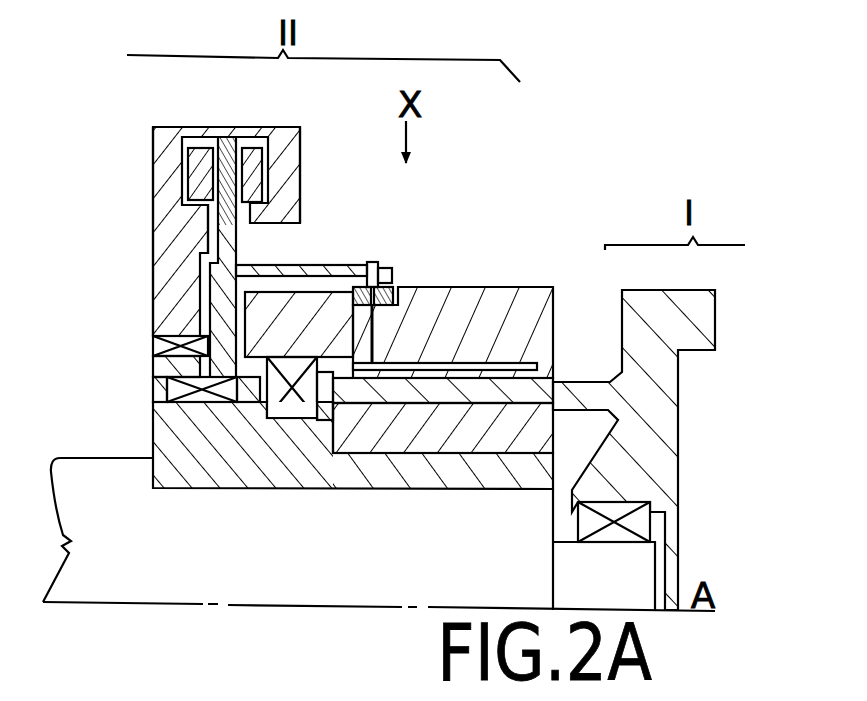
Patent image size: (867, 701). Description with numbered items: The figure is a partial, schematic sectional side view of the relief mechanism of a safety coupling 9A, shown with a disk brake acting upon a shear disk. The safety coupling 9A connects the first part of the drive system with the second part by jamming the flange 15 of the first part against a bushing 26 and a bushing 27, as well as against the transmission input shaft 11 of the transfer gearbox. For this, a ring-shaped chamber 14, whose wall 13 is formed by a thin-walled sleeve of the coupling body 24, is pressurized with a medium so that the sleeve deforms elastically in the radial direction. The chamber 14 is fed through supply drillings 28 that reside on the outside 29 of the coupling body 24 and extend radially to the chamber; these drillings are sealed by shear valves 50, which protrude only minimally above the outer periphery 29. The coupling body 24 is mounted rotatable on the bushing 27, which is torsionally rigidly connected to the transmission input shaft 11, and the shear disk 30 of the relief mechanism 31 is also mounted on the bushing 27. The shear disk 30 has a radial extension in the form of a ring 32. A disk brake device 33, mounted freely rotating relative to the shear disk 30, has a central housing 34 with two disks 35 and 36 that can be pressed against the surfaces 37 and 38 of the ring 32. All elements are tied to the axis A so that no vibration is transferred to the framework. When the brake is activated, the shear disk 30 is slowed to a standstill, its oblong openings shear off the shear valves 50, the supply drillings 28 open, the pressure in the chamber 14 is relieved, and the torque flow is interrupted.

The safety coupling 9A is at (529, 198).
The transmission input shaft 11 is at (190, 582).
The wall 13 is at (462, 300).
The ring-shaped chamber 14 is at (445, 363).
The flange 15 is at (645, 362).
The coupling body 24 is at (560, 293).
The bushing 26 is at (435, 435).
The bushing 27 is at (310, 465).
The supply drillings 28 is at (416, 287).
The outside of the coupling body 29 is at (447, 360).
The shear disk 30 is at (313, 265).
The relief mechanism 31 is at (256, 115).
The ring 32 is at (272, 176).
The disk brake device 33 is at (148, 148).
The central housing 34 is at (163, 202).
The disk 35 is at (200, 160).
The disk 36 is at (252, 157).
The surface 37 is at (236, 235).
The surface 38 is at (207, 223).
The shear valves 50 is at (371, 262).